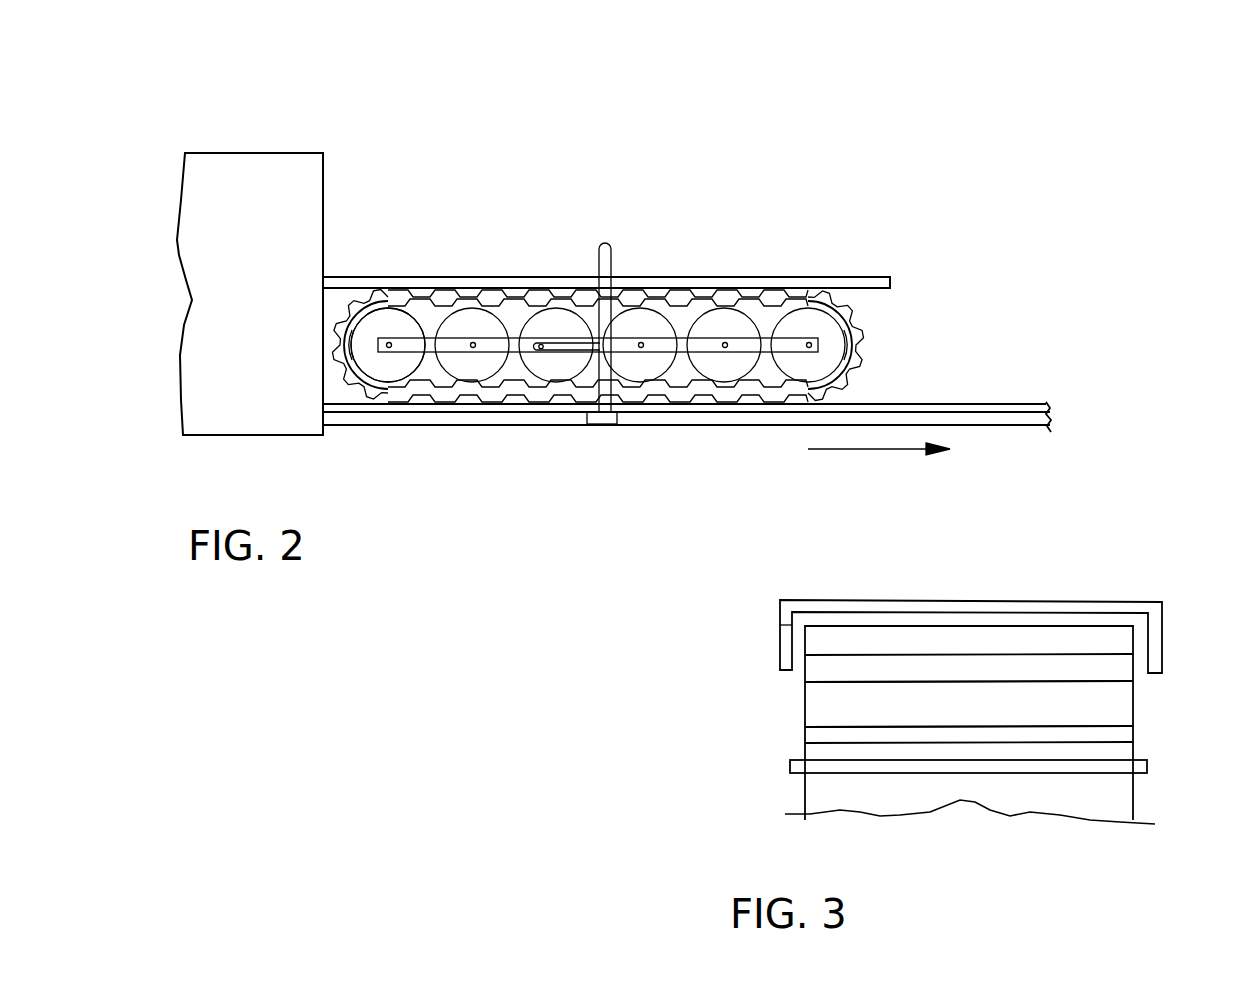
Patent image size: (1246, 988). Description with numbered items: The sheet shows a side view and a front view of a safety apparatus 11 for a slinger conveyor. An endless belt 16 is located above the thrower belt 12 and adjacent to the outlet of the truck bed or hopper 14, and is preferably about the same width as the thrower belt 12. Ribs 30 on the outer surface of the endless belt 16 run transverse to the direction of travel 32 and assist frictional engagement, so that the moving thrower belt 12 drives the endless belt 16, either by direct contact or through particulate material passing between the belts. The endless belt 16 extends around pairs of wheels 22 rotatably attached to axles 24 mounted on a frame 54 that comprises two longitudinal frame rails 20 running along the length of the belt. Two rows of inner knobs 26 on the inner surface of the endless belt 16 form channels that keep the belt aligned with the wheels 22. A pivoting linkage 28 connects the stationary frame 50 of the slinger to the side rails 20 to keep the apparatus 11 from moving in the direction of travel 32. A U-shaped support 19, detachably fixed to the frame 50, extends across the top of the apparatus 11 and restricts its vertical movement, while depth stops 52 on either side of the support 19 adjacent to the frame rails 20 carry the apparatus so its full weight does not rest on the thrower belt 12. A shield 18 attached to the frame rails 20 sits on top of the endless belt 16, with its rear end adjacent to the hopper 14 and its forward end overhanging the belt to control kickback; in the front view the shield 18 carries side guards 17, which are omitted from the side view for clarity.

In FIG. 2, the safety apparatus 11 is at (811, 252).
In FIG. 2, the thrower belt 12 is at (972, 404).
In FIG. 3, the thrower belt 12 is at (1100, 770).
In FIG. 2, the hopper 14 is at (258, 153).
In FIG. 3, the endless belt 16 is at (812, 641).
In FIG. 3, the side guards 17 is at (780, 626).
In FIG. 2, the shield 18 is at (873, 277).
In FIG. 3, the shield 18 is at (1118, 600).
In FIG. 2, the support 19 is at (606, 243).
In FIG. 2, the frame rails 20 is at (747, 345).
In FIG. 2, the wheels 22 is at (598, 344).
In FIG. 2, the axles 24 is at (474, 343).
In FIG. 2, the inner knobs 26 is at (516, 383).
In FIG. 2, the pivoting linkage 28 is at (559, 352).
In FIG. 2, the ribs 30 is at (864, 350).
In FIG. 3, the ribs 30 is at (1115, 672).
In FIG. 2, the direction of travel 32 is at (840, 452).
In FIG. 2, the frame 50 is at (683, 426).
In FIG. 3, the frame 50 is at (1047, 797).
In FIG. 2, the depth stops 52 is at (604, 360).
In FIG. 2, the frame 54 is at (428, 325).